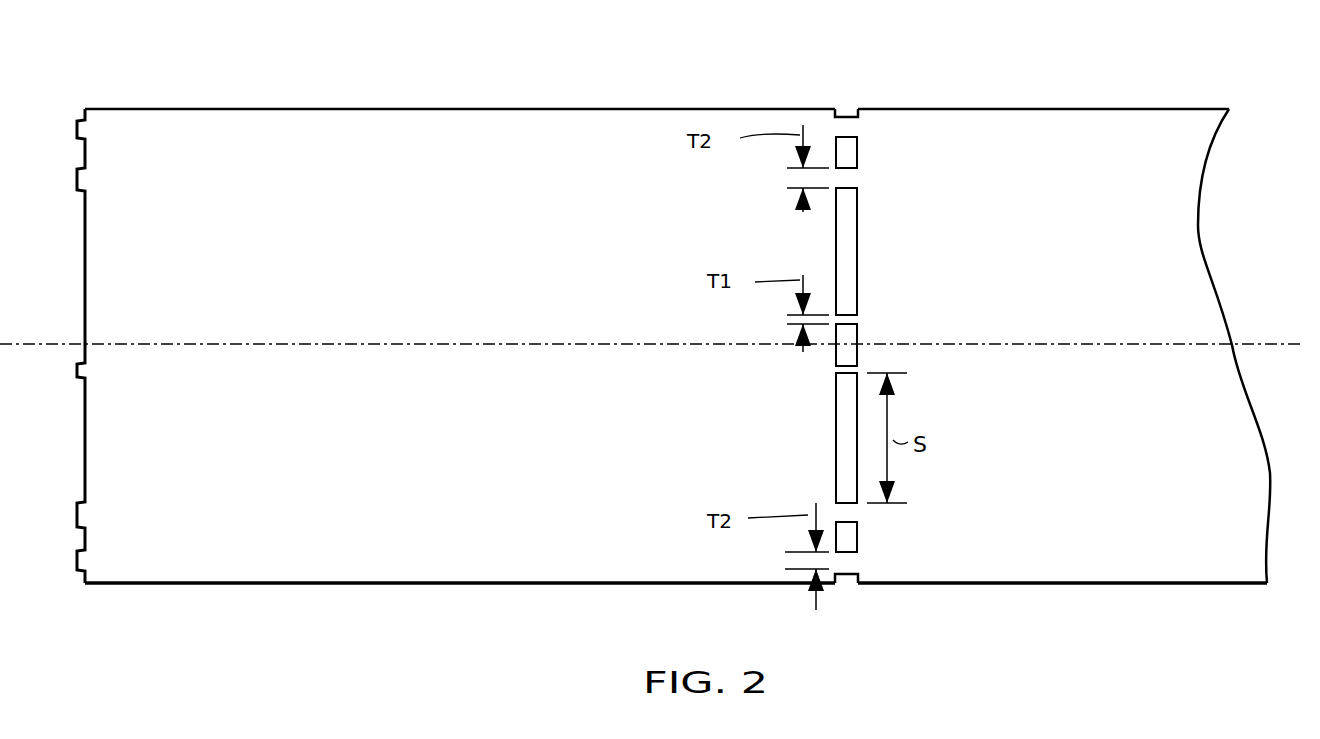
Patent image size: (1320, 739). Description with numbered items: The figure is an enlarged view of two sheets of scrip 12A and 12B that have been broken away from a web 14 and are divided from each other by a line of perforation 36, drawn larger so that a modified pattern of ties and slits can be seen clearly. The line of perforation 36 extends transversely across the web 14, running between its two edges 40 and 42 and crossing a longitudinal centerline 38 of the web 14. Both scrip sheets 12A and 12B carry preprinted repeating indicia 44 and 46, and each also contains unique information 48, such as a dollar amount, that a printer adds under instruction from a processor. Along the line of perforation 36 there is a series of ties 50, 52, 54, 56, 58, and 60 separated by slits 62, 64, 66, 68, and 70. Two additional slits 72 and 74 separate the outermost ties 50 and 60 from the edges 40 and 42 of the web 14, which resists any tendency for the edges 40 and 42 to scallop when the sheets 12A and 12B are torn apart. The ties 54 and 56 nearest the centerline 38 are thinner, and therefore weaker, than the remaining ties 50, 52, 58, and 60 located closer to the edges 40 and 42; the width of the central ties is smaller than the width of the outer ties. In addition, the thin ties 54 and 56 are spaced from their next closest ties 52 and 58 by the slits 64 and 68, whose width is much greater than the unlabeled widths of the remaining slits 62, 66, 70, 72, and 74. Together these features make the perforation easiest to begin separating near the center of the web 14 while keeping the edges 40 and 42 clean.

The sheet of scrip 12A is at (280, 143).
The sheet of scrip 12B is at (1068, 143).
The web 14 is at (340, 588).
The line of perforation 36 is at (868, 378).
The longitudinal centerline 38 is at (1250, 345).
The edge of the web 40 is at (470, 108).
The edge of the web 42 is at (1030, 585).
The repeating indicia 44 is at (205, 450).
The repeating indicia 46 is at (595, 212).
The unique information 48 is at (585, 390).
The tie 50 is at (857, 125).
The tie 52 is at (857, 178).
The tie 54 is at (858, 318).
The tie 56 is at (857, 368).
The tie 58 is at (850, 515).
The tie 60 is at (857, 558).
The slit 62 is at (852, 150).
The slit 64 is at (848, 237).
The slit 66 is at (836, 359).
The slit 68 is at (836, 440).
The slit 70 is at (855, 538).
The slit 72 is at (846, 110).
The slit 74 is at (857, 576).